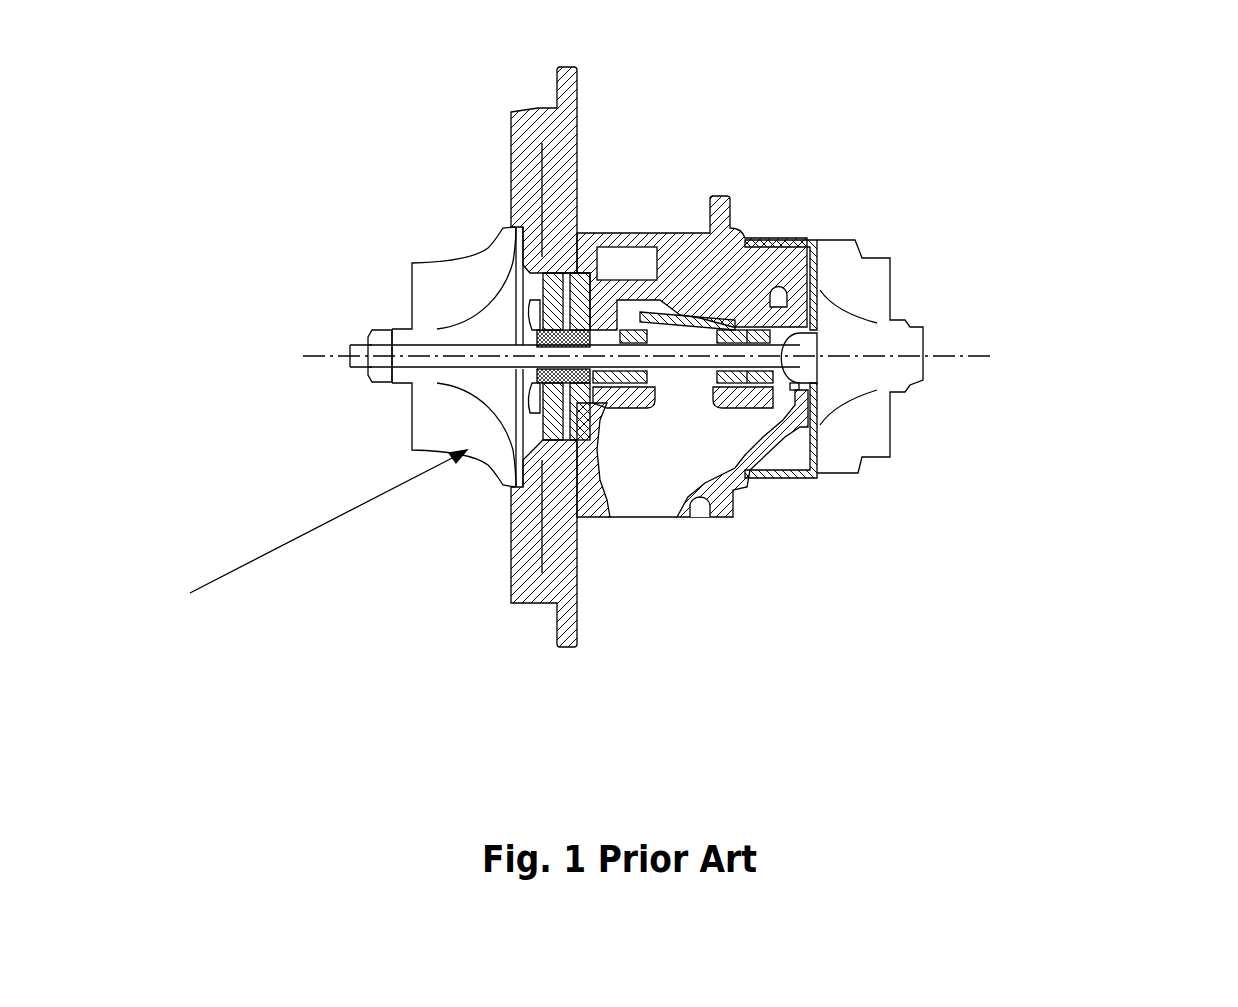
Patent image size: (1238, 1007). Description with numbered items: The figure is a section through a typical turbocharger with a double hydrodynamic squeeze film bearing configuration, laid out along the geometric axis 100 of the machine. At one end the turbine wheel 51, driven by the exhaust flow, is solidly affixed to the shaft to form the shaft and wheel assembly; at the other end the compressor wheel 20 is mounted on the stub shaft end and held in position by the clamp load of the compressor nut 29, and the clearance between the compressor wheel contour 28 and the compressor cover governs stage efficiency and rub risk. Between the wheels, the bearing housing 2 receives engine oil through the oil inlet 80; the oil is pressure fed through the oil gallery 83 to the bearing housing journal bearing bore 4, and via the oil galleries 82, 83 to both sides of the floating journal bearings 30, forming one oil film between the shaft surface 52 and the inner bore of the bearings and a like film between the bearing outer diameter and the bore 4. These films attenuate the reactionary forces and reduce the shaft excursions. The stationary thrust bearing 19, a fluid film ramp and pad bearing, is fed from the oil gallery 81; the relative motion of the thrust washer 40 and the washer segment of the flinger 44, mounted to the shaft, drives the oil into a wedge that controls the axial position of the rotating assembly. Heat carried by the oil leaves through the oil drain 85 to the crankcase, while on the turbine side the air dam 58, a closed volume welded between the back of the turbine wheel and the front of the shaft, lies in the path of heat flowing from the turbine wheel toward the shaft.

The bearing housing 2 is at (718, 193).
The bearing housing journal bearing bore 4 is at (733, 313).
The thrust bearing 19 is at (578, 432).
The compressor wheel 20 is at (467, 400).
The compressor wheel contour 28 is at (540, 372).
The compressor nut 29 is at (373, 375).
The journal bearings 30 is at (812, 408).
The thrust washer 40 is at (587, 390).
The flinger 44 is at (307, 530).
The turbine wheel 51 is at (905, 358).
The shaft surface 52 is at (634, 327).
The air dam 58 is at (923, 357).
The oil inlet 80 is at (628, 262).
The oil gallery 81 is at (597, 300).
The oil gallery 82 is at (837, 323).
The oil gallery 83 is at (622, 313).
The oil drain 85 is at (645, 503).
The geometric axis 100 is at (972, 366).